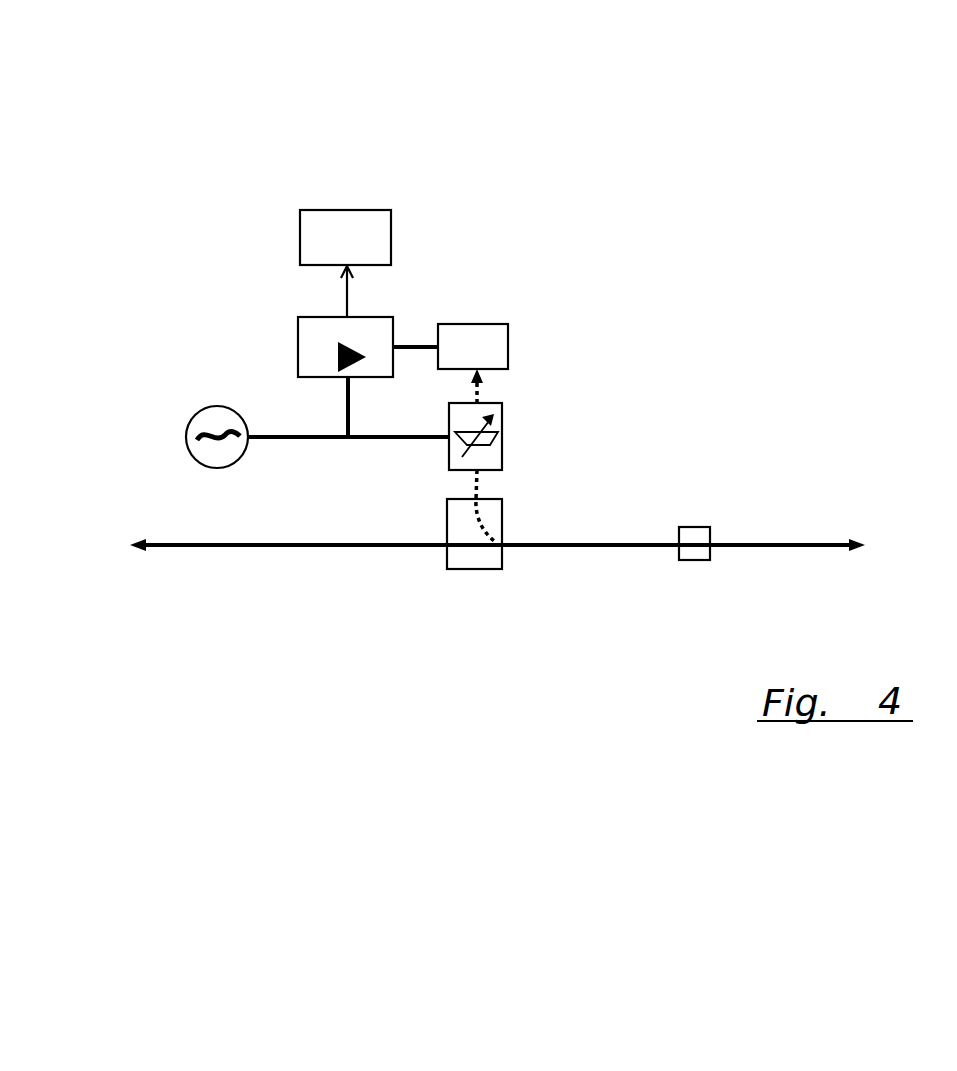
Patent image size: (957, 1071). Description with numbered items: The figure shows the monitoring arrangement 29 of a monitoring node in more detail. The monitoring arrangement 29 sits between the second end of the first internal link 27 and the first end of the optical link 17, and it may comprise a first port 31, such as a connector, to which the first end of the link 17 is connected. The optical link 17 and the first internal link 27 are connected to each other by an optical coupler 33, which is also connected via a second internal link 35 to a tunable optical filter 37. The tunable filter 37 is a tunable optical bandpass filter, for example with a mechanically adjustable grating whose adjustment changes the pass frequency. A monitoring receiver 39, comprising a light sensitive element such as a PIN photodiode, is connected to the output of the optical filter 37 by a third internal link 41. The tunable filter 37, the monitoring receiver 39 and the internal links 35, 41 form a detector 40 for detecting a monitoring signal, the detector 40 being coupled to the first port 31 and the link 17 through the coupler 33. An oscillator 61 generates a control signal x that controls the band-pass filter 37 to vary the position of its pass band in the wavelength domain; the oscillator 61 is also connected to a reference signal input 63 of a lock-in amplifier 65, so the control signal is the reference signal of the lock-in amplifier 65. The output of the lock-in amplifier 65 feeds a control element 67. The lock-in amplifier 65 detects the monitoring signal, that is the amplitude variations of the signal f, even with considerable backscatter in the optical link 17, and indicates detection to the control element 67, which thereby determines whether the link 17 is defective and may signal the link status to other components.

The optical link 17 is at (818, 542).
The first internal link 27 is at (250, 543).
The monitoring arrangement 29 is at (197, 130).
The first port 31 is at (693, 527).
The optical coupler 33 is at (472, 558).
The second internal link 35 is at (488, 489).
The tunable optical filter 37 is at (510, 407).
The monitoring receiver 39 is at (505, 328).
The detector 40 is at (560, 197).
The third internal link 41 is at (490, 387).
The oscillator 61 is at (207, 413).
The reference signal input 63 is at (335, 385).
The lock-in amplifier 65 is at (385, 325).
The control element 67 is at (360, 220).